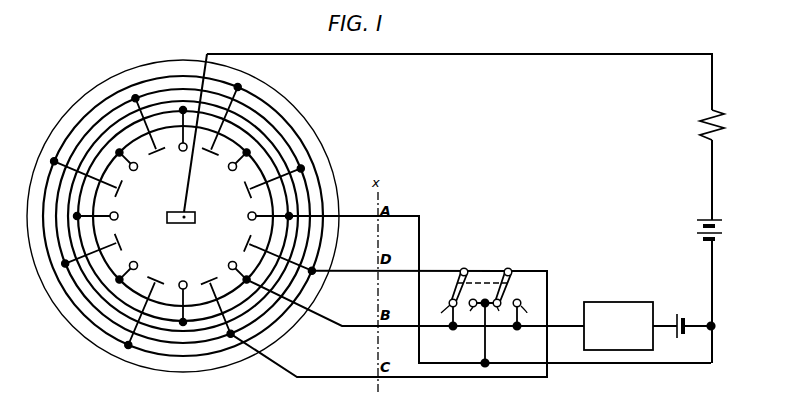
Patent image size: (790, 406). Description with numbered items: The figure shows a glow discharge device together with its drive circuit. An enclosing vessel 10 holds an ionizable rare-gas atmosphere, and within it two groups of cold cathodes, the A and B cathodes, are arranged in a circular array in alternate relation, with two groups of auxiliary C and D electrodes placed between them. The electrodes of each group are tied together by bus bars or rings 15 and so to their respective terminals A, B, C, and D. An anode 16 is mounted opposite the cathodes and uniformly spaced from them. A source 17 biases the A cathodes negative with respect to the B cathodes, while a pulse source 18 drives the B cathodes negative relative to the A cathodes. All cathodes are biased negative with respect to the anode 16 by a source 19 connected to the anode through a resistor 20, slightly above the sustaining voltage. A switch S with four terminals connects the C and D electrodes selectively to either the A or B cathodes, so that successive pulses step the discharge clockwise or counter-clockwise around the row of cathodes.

The enclosing vessel 10 is at (287, 100).
The bus bars or rings 15 is at (300, 172).
The anode 16 is at (178, 223).
The source 17 is at (684, 311).
The pulse source 18 is at (632, 301).
The source 19 is at (697, 225).
The resistor 20 is at (698, 124).
The switch S is at (486, 276).